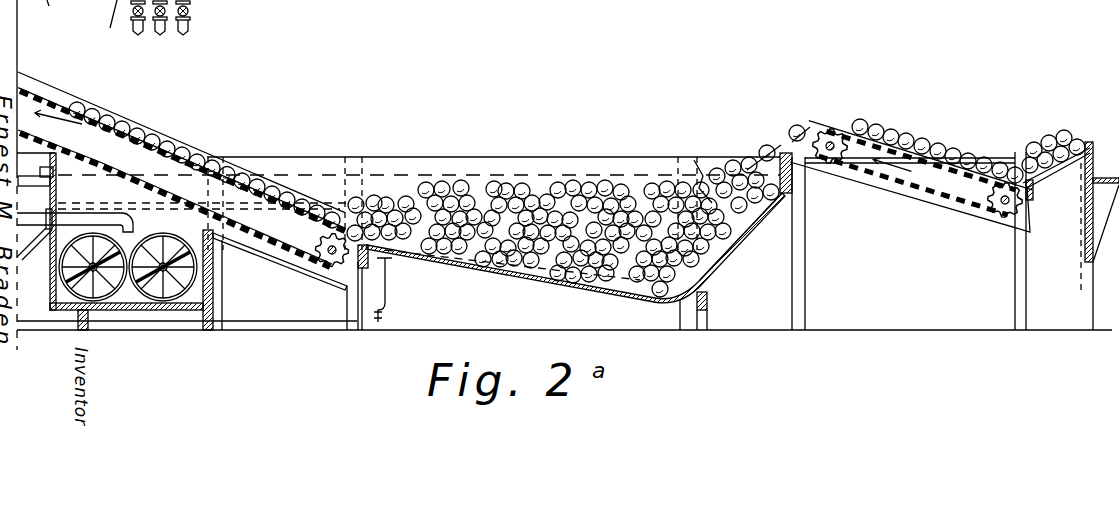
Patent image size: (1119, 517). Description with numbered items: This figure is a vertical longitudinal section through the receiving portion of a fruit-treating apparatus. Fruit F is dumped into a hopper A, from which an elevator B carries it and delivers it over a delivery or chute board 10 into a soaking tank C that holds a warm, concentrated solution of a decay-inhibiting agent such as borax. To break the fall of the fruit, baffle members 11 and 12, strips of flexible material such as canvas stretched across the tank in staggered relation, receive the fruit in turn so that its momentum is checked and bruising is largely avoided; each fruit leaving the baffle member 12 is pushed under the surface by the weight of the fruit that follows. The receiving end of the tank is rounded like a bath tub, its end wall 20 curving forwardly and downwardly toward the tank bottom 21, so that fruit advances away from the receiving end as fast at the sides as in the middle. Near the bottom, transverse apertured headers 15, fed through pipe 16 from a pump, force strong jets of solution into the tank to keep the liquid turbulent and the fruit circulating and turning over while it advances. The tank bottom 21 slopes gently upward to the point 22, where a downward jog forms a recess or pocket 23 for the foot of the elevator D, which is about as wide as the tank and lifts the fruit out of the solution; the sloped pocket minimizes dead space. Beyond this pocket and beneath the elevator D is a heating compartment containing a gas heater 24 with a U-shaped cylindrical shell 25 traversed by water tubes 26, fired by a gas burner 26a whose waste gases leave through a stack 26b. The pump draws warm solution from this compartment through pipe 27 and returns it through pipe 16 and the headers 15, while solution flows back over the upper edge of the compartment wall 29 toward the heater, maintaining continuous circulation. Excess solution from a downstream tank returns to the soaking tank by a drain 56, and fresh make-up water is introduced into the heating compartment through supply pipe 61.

The chute board 10 is at (808, 133).
The baffle member 11 is at (806, 198).
The baffle member 12 is at (713, 156).
The apertured header 15 is at (664, 299).
The supply pipe 16 is at (292, 321).
The end wall 20 is at (742, 250).
The tank bottom 21 is at (572, 293).
The point of downward jog 22 is at (388, 268).
The recess or pocket 23 is at (310, 272).
The gas heater 24 is at (94, 27).
The cylindrical shell 25 is at (122, 300).
The water tubes 26 is at (175, 300).
The gas burner 26a is at (183, 35).
The stack 26b is at (50, 19).
The pump intake pipe 27 is at (101, 214).
The compartment wall 29 is at (214, 276).
The drain 56 is at (50, 148).
The supply pipe 61 is at (105, 169).
The hopper A is at (1057, 172).
The elevator B is at (931, 195).
The soaking tank C is at (605, 157).
The elevator D is at (55, 110).
The fruit F is at (552, 178).